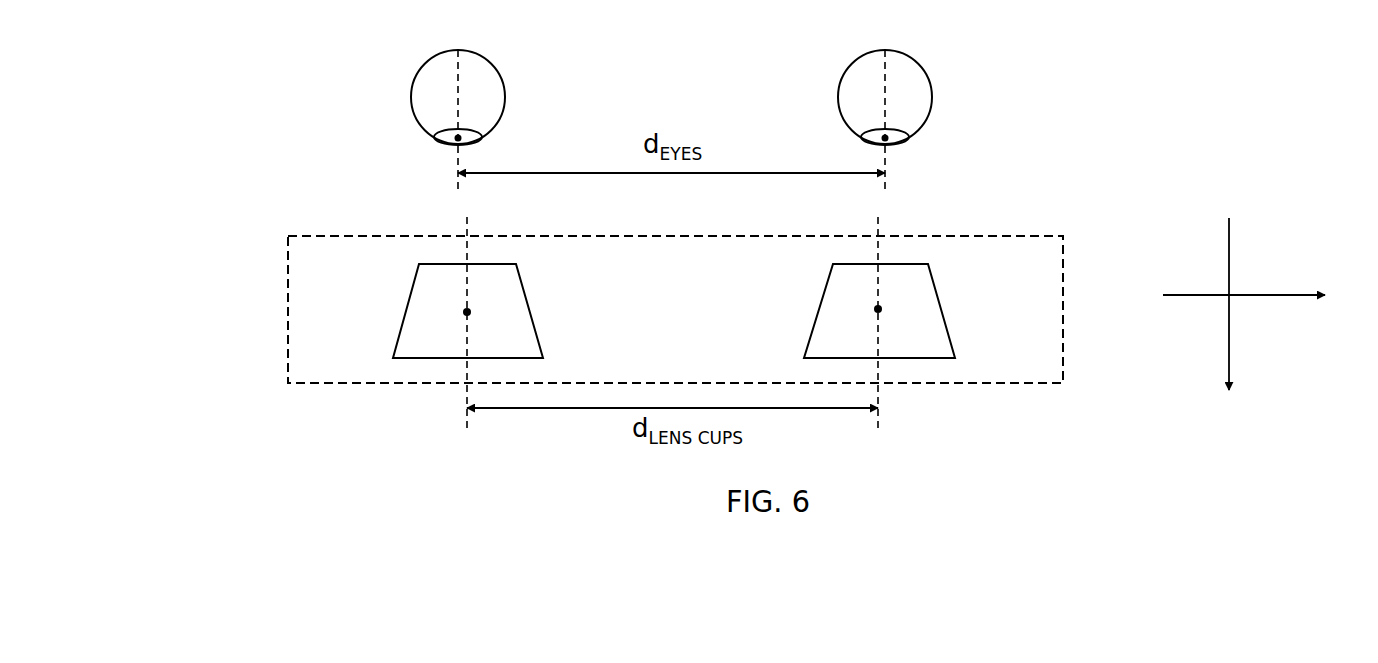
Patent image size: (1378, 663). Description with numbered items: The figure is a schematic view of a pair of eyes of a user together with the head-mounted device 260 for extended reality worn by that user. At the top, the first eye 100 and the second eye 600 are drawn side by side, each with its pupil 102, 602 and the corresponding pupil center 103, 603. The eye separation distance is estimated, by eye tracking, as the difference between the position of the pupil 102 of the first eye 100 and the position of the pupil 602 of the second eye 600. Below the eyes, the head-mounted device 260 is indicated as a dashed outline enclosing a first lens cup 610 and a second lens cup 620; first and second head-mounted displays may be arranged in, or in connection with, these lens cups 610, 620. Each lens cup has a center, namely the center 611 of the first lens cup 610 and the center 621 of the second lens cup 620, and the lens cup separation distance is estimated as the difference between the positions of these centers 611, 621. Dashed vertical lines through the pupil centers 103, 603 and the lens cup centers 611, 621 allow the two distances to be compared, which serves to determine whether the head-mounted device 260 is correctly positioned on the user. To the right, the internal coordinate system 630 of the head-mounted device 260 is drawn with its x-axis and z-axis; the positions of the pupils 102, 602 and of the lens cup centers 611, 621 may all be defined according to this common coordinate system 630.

The first eye 100 is at (528, 86).
The pupil 102 is at (440, 136).
The pupil center 103 is at (450, 140).
The second eye 600 is at (816, 89).
The pupil 602 is at (903, 136).
The pupil center 603 is at (892, 142).
The head-mounted device 260 is at (288, 323).
The first lens cup 610 is at (405, 311).
The center of the first lens cup 611 is at (465, 313).
The second lens cup 620 is at (945, 310).
The center of the second lens cup 621 is at (882, 310).
The internal coordinate system 630 is at (1278, 270).